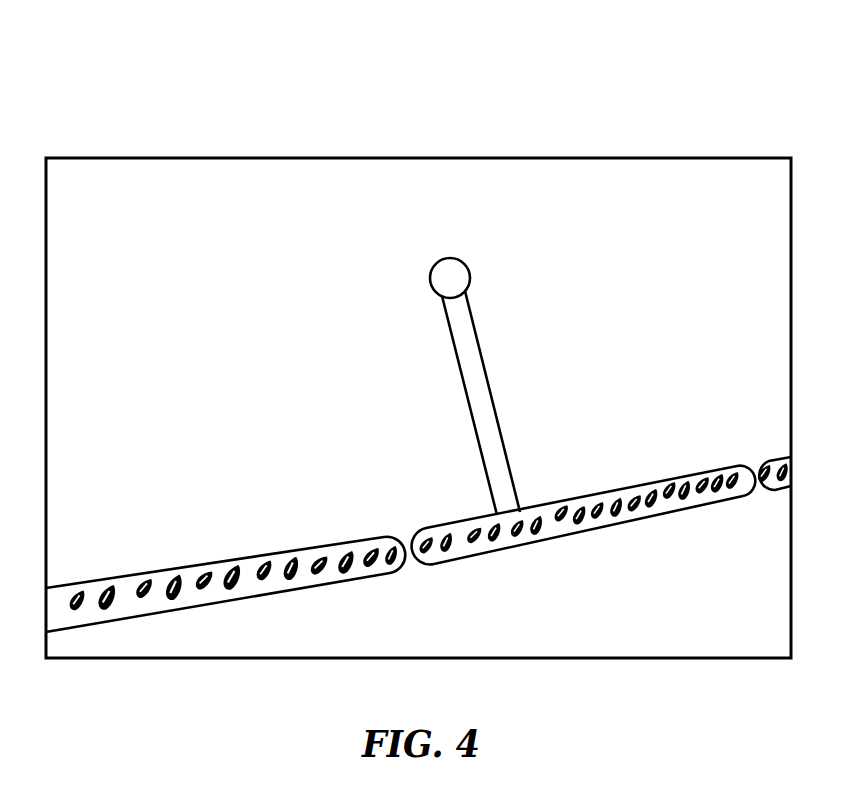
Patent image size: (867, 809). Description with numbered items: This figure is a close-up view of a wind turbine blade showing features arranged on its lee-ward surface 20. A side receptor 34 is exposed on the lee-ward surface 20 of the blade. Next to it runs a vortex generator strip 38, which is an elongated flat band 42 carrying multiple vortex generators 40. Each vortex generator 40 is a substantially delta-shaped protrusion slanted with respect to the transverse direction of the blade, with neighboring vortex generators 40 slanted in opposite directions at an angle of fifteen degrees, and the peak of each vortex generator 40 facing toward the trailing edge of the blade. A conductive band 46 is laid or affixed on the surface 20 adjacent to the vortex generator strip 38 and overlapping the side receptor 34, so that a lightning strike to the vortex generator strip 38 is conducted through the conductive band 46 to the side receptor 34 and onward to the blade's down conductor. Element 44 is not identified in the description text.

The lee-ward surface 20 is at (555, 171).
The side receptor 34 is at (445, 267).
The vortex generator strip 38 is at (245, 554).
The vortex generator 40 is at (563, 507).
The flat band 42 is at (574, 533).
The third segment 44 is at (773, 473).
The conductive band 46 is at (478, 357).